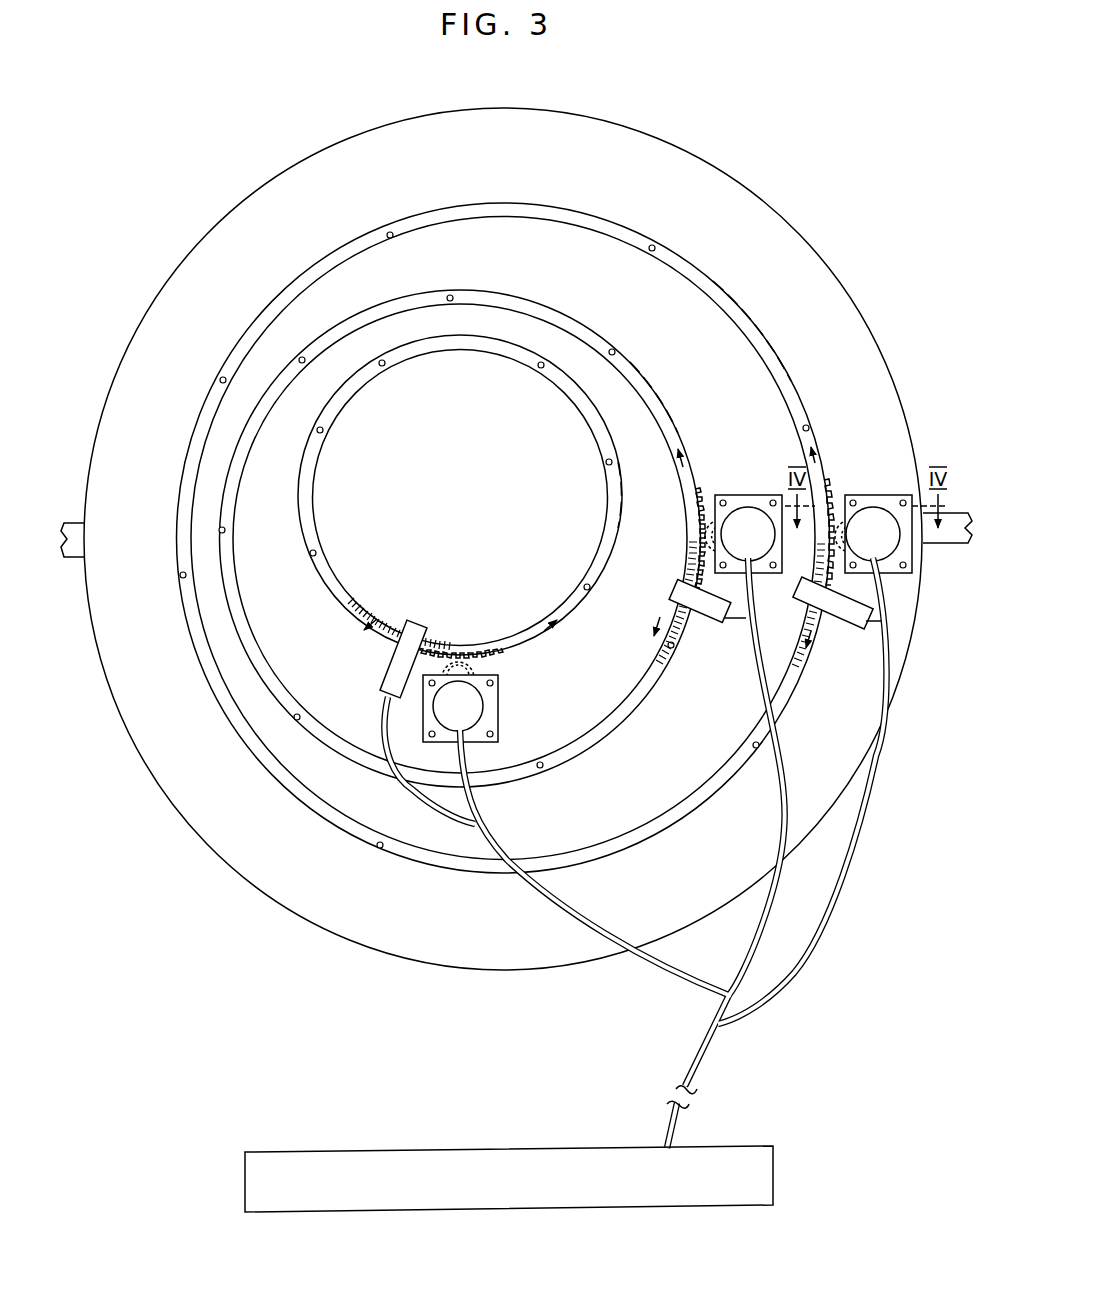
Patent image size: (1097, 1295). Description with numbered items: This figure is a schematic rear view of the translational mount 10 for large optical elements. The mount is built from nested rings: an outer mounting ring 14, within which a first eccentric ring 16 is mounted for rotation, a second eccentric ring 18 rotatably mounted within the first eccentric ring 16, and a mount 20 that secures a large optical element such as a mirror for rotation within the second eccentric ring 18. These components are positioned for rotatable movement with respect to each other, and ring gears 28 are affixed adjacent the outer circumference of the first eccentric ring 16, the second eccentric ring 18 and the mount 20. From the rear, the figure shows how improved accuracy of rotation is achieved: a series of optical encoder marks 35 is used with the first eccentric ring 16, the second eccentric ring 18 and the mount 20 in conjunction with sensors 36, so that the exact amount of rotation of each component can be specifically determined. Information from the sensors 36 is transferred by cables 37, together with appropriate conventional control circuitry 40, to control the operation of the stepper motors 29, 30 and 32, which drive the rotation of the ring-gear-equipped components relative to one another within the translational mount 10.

The translational mount 10 is at (754, 106).
The outer mounting ring 14 is at (762, 295).
The first eccentric ring 16 is at (715, 377).
The second eccentric ring 18 is at (648, 454).
The mount 20 is at (515, 456).
The ring gears 28 is at (768, 323).
The stepper motor 29 is at (861, 493).
The stepper motor 30 is at (731, 493).
The stepper motor 32 is at (500, 693).
The optical encoder marks 35 is at (437, 640).
The sensors 36 is at (388, 658).
The cables 37 is at (868, 812).
The control circuitry 40 is at (648, 1207).